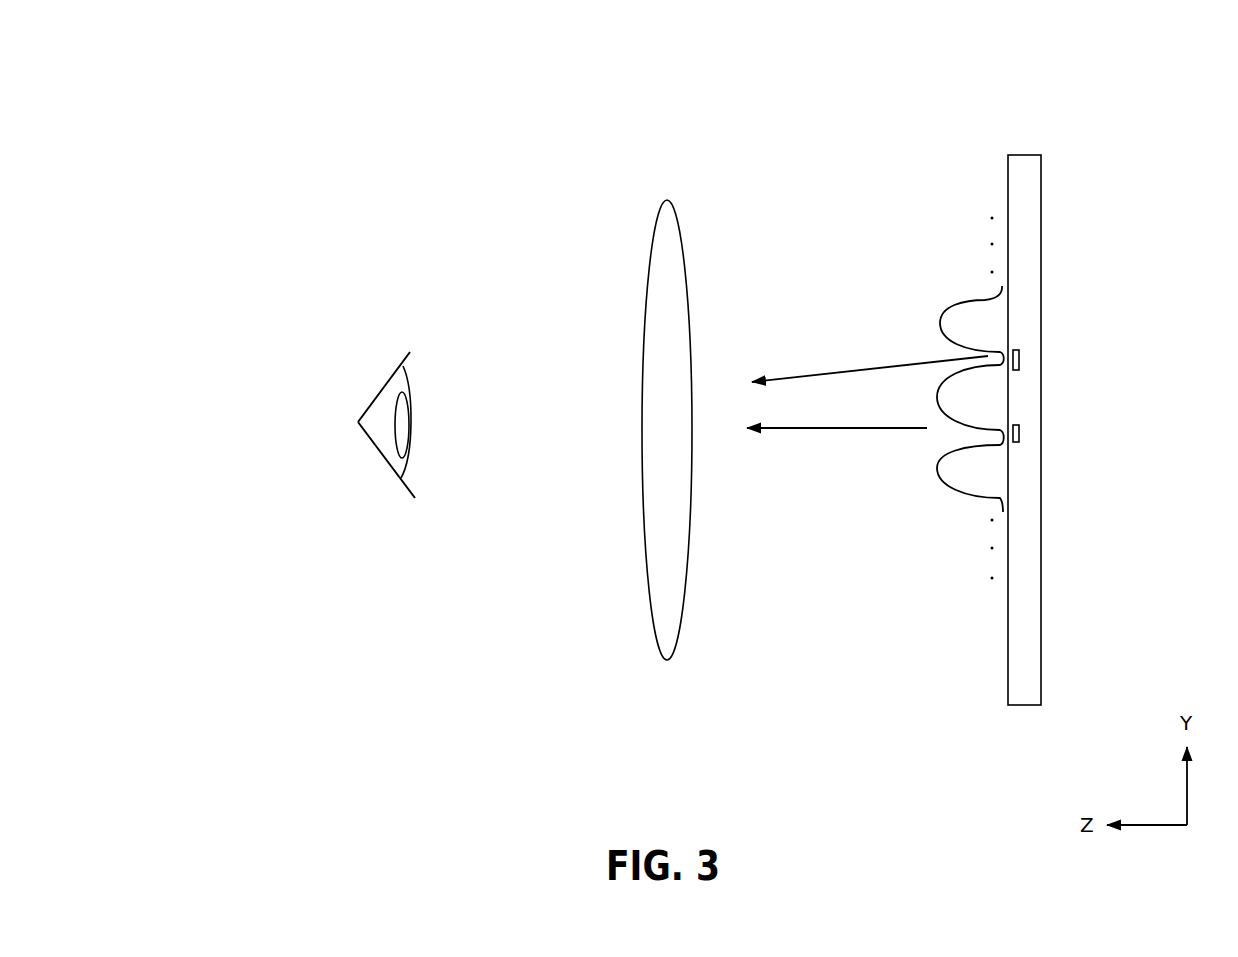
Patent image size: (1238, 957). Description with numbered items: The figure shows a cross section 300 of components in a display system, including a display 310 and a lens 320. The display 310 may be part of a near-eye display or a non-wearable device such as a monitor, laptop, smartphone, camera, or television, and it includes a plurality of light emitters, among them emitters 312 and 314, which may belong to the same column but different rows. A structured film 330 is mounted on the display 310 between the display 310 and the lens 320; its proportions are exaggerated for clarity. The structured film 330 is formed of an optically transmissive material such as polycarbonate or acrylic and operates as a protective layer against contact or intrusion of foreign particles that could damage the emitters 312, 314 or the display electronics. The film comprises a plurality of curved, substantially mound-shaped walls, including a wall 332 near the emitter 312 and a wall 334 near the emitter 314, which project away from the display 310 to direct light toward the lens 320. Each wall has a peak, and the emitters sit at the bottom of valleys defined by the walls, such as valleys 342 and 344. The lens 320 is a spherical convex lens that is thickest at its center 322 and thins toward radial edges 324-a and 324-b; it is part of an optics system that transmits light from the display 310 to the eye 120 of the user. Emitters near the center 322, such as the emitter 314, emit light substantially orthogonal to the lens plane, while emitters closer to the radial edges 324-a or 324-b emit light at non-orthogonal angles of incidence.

The cross section 300 is at (151, 62).
The eye 120 is at (358, 348).
The lens 320 is at (647, 307).
The center 322 is at (671, 418).
The radial edge 324-a is at (660, 198).
The radial edge 324-b is at (660, 668).
The display 310 is at (1025, 155).
The emitter 312 is at (1020, 360).
The emitter 314 is at (1020, 433).
The structured film 330 is at (933, 296).
The wall 332 is at (937, 323).
The wall 334 is at (937, 468).
The valley 342 is at (1004, 350).
The valley 344 is at (1003, 443).